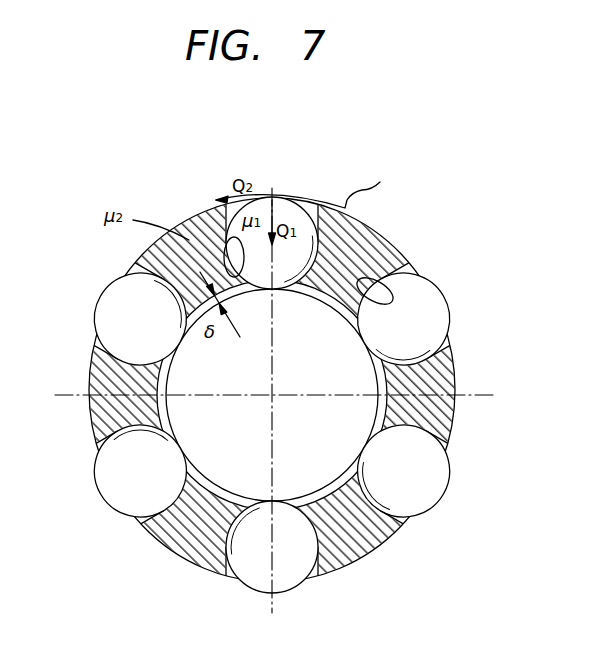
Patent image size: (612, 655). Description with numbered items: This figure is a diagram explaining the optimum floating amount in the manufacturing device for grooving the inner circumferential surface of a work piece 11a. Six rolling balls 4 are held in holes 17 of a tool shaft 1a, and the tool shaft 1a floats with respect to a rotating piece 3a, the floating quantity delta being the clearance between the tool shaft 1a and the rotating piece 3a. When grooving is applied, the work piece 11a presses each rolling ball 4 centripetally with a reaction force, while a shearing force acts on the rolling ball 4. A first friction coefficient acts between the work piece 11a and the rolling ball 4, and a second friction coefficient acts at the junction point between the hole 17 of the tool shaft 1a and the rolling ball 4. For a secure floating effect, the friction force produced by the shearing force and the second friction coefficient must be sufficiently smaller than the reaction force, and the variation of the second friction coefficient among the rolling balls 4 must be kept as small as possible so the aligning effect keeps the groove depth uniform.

The tool shaft 1a is at (453, 363).
The rotating piece 3a is at (368, 548).
The rolling ball 4 is at (97, 298).
The hole 17 is at (226, 242).
The work piece 11a is at (313, 188).